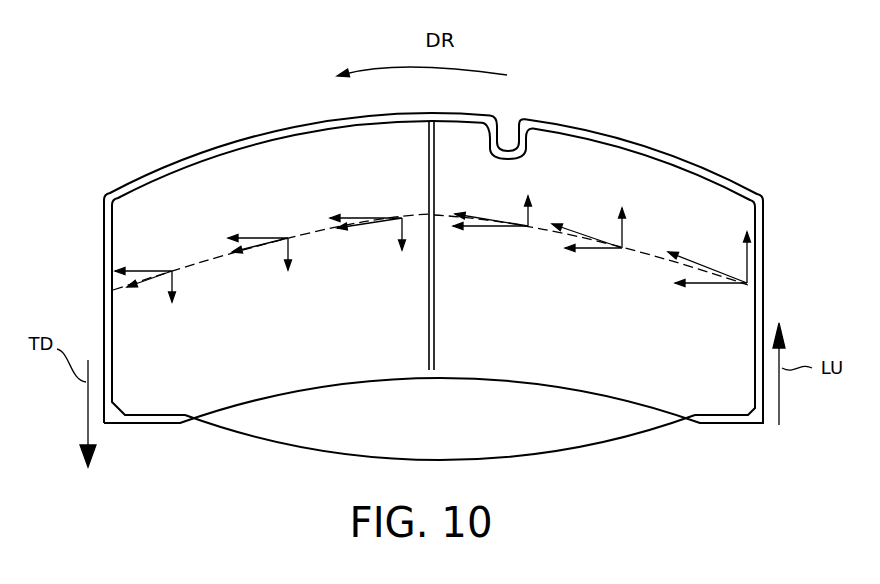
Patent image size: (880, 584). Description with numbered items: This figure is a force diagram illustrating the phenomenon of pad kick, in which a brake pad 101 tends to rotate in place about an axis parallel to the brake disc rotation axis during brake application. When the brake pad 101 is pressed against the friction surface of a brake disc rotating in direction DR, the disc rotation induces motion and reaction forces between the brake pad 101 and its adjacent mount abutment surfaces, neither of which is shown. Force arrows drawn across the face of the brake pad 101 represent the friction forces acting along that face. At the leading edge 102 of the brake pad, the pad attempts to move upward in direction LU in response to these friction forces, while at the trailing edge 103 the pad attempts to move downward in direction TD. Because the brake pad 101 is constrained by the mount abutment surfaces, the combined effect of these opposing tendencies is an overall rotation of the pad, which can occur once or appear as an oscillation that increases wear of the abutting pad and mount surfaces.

The brake pad 101 is at (133, 182).
The leading edge 102 is at (770, 427).
The trailing edge 103 is at (80, 413).